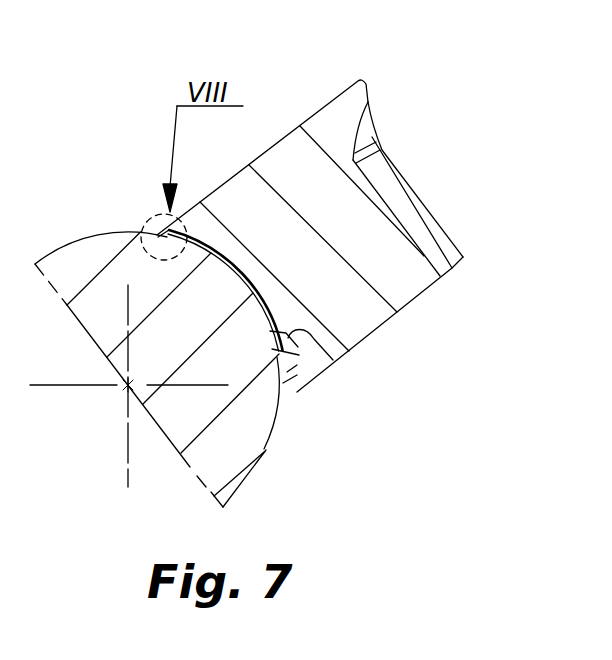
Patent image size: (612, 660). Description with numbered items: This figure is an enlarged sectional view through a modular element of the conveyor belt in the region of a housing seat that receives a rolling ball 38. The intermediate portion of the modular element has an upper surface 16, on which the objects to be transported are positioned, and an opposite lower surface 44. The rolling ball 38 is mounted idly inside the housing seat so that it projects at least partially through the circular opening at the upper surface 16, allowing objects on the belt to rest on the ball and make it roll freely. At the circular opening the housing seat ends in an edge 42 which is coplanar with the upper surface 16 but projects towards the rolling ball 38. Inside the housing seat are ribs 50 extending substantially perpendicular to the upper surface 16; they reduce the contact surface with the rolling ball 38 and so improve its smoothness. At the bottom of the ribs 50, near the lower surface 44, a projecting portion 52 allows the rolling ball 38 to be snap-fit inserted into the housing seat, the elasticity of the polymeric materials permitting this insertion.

The upper surface 16 is at (280, 141).
The edge 42 is at (358, 95).
The lower surface 44 is at (424, 292).
The rolling ball 38 is at (182, 418).
The ribs 50 is at (287, 360).
The projecting portion 52 is at (333, 360).